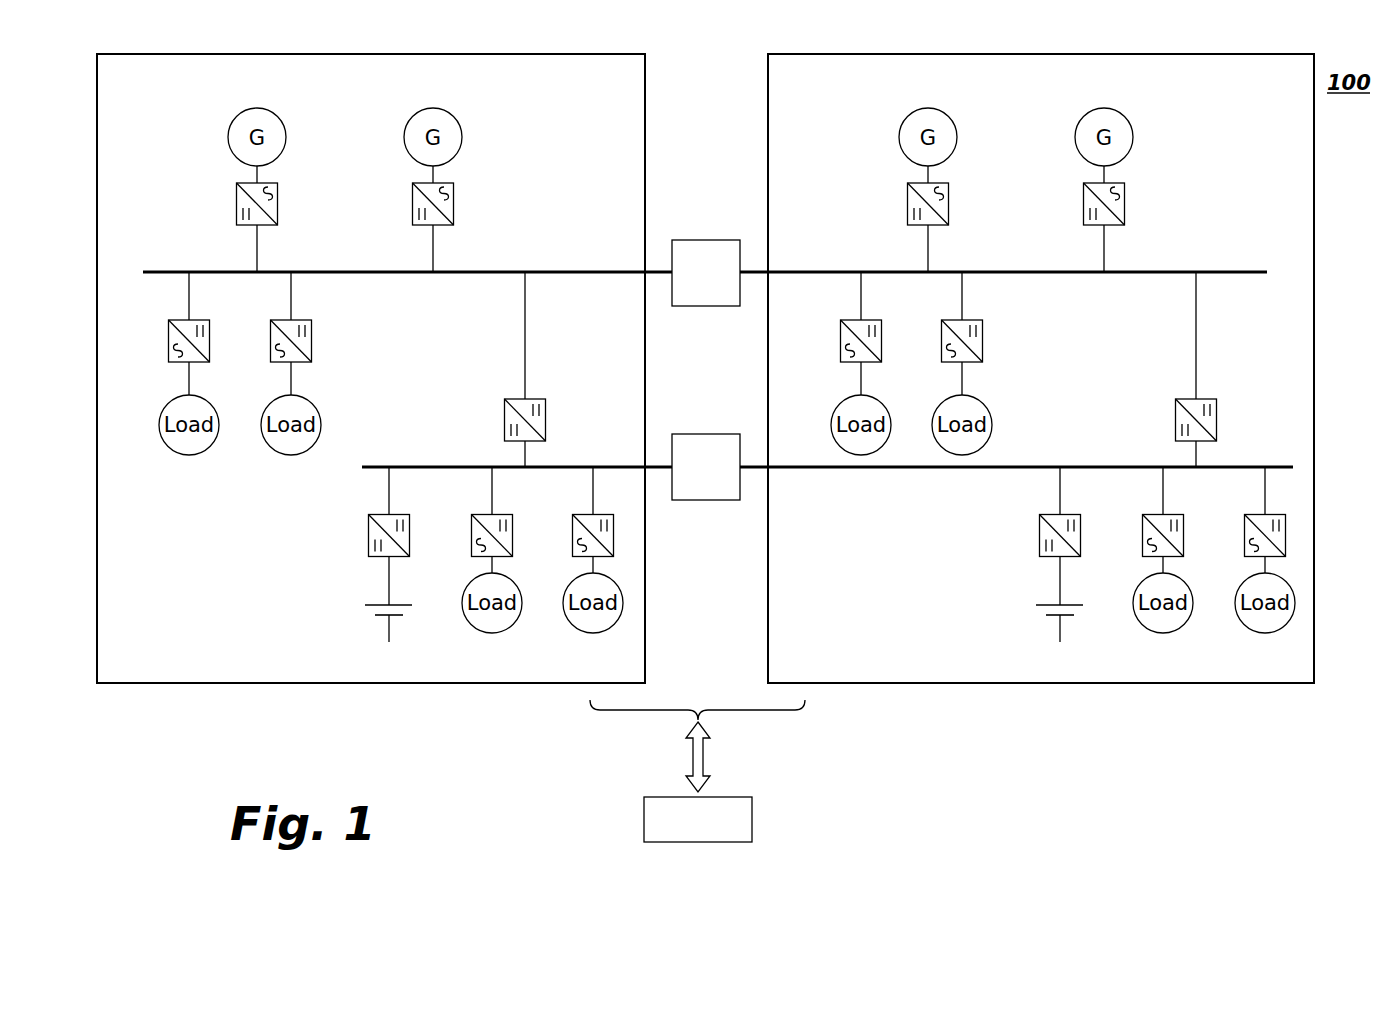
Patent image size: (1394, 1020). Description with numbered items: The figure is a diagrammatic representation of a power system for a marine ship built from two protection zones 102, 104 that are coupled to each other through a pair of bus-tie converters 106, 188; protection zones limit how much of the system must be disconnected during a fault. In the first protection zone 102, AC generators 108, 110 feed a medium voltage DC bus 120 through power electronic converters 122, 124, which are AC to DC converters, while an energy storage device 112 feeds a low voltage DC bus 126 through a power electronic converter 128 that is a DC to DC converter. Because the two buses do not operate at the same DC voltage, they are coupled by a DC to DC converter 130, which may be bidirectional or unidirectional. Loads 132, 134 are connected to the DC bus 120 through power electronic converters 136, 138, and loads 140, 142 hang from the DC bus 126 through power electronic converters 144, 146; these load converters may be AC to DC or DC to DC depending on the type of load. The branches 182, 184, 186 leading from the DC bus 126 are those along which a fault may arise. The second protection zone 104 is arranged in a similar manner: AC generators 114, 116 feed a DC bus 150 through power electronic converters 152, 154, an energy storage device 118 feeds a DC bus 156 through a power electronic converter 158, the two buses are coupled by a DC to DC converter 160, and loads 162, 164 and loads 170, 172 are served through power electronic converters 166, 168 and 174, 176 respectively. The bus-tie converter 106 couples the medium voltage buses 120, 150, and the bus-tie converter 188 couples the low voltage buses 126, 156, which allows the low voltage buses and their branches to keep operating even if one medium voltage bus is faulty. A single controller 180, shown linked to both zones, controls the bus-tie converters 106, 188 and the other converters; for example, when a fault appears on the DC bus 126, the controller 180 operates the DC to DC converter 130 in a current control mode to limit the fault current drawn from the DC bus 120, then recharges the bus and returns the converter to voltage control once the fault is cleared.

The protection zone 102 is at (645, 128).
The protection zone 104 is at (768, 84).
The bus-tie converter 106 is at (702, 239).
The AC generator 108 is at (246, 121).
The AC generator 110 is at (423, 121).
The energy storage device 112 is at (375, 617).
The AC generator 114 is at (916, 121).
The AC generator 116 is at (1094, 121).
The energy storage device 118 is at (1046, 617).
The DC bus 120 is at (328, 272).
The power electronic converter 122 is at (247, 203).
The power electronic converter 124 is at (423, 203).
The DC bus 126 is at (432, 467).
The power electronic converter 128 is at (387, 486).
The DC to DC converter 130 is at (505, 411).
The load 132 is at (166, 419).
The load 134 is at (268, 419).
The power electronic converter 136 is at (174, 330).
The power electronic converter 138 is at (276, 330).
The load 140 is at (484, 631).
The load 142 is at (586, 631).
The power electronic converter 144 is at (471, 544).
The power electronic converter 146 is at (573, 544).
The DC bus 150 is at (1000, 272).
The power electronic converter 152 is at (917, 203).
The power electronic converter 154 is at (1094, 203).
The DC bus 156 is at (1103, 467).
The power electronic converter 158 is at (1039, 544).
The DC to DC converter 160 is at (1176, 411).
The load 162 is at (838, 419).
The load 164 is at (939, 419).
The power electronic converter 166 is at (846, 330).
The power electronic converter 168 is at (948, 330).
The load 170 is at (1156, 631).
The load 172 is at (1258, 631).
The power electronic converter 174 is at (1142, 544).
The power electronic converter 176 is at (1244, 544).
The controller 180 is at (644, 818).
The branch 182 is at (429, 351).
The branch 184 is at (492, 492).
The branch 186 is at (594, 492).
The bus-tie converter 188 is at (706, 493).